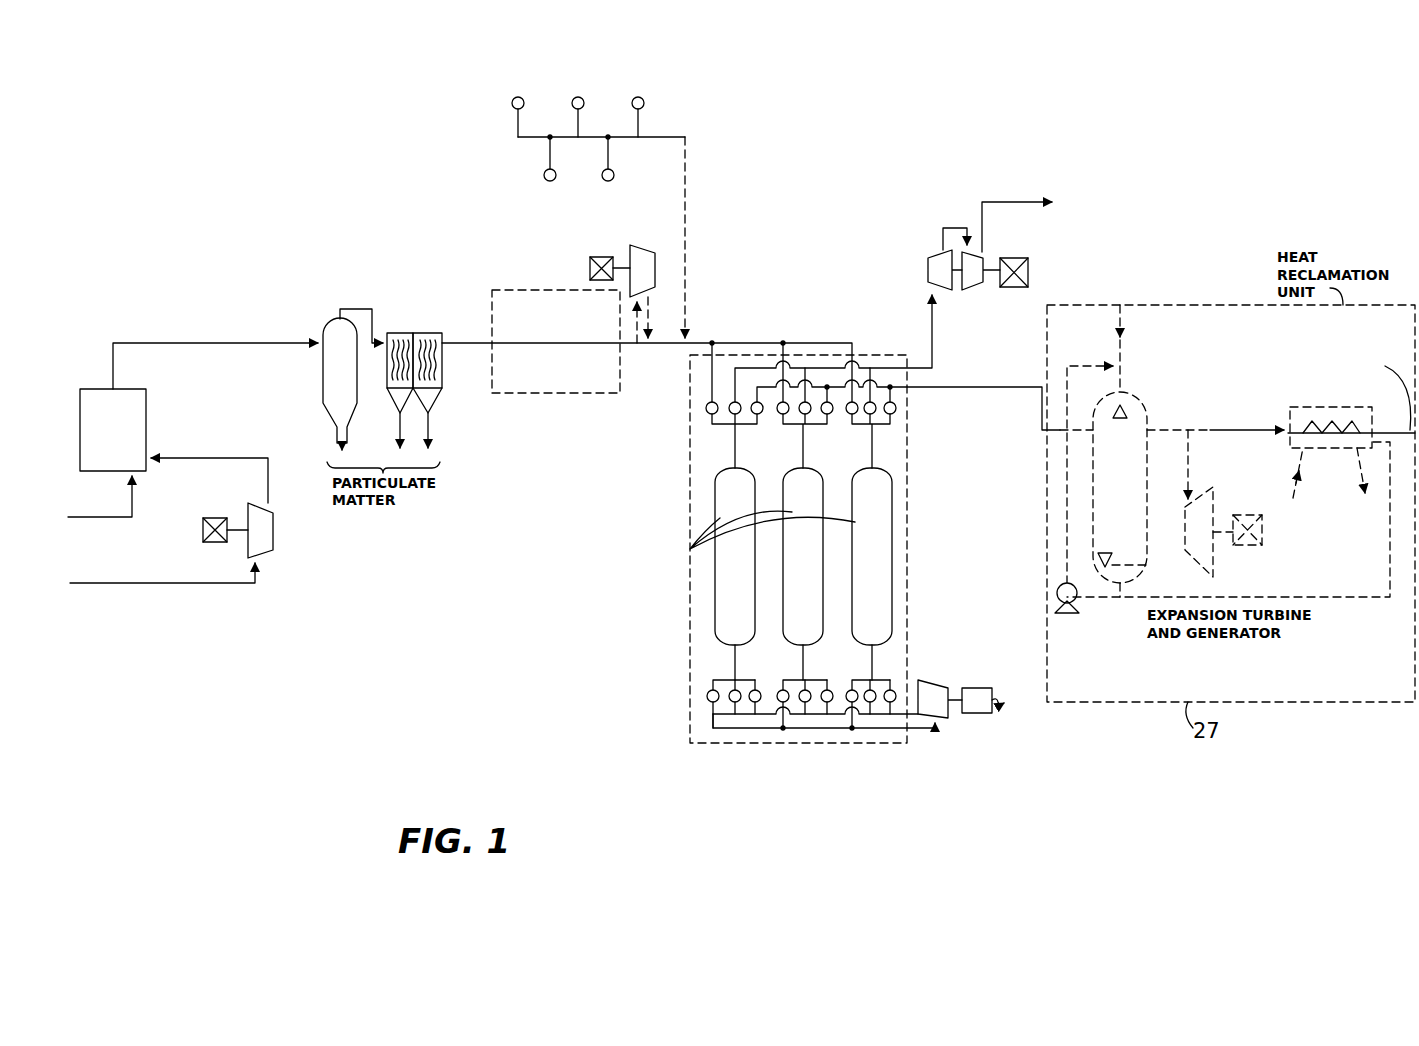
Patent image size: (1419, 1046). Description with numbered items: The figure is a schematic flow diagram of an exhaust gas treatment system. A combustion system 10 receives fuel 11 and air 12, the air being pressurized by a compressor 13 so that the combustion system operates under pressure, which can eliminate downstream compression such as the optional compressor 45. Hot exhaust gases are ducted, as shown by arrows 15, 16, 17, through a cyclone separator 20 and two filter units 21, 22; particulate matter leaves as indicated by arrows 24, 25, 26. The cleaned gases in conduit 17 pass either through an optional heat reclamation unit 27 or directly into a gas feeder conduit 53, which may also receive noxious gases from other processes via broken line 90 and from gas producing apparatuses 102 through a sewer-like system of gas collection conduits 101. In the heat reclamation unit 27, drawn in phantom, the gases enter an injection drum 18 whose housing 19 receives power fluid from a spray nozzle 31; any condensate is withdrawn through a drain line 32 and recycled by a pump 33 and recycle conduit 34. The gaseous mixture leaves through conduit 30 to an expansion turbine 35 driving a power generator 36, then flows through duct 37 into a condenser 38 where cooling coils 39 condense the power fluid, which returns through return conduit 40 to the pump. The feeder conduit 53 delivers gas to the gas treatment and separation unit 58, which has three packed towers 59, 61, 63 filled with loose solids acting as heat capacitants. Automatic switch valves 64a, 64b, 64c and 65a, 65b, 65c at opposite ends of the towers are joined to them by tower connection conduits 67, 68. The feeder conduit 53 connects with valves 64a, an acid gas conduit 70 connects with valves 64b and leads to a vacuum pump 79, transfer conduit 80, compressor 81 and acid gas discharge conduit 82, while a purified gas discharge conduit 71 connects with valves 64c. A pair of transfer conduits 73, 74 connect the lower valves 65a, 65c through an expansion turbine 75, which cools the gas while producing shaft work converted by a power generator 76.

The combustion system 10 is at (122, 450).
The fuel supply arrow 11 is at (132, 497).
The air supply 12 is at (268, 487).
The compressor 13 is at (273, 541).
The exhaust gas duct arrow 15 is at (113, 371).
The exhaust gas duct arrow 16 is at (372, 316).
The conduit 17 is at (470, 343).
The injection drum 18 is at (1152, 412).
The housing 19 is at (1153, 485).
The cyclone separator 20 is at (323, 396).
The filter unit 21 is at (391, 400).
The filter unit 22 is at (438, 400).
The particulate matter arrow 24 is at (341, 441).
The particulate matter arrow 25 is at (400, 442).
The particulate matter arrow 26 is at (430, 442).
The heat reclamation unit 27 is at (565, 393).
The conduit 30 is at (1178, 430).
The spray nozzle 31 is at (1115, 420).
The drain line 32 is at (1122, 592).
The pump 33 is at (1076, 610).
The recycle conduit 34 is at (1067, 493).
The expansion turbine 35 is at (1213, 500).
The power generator 36 is at (1258, 540).
The duct 37 is at (1238, 430).
The condenser 38 is at (1378, 414).
The coils 39 is at (1360, 475).
The return conduit 40 is at (1390, 543).
The compressor 45 is at (652, 258).
The gas feeder conduit 53 is at (738, 343).
The gas treatment and separation unit 58 is at (914, 555).
The packed tower 59 is at (748, 569).
The packed tower 61 is at (815, 569).
The packed tower 63 is at (885, 569).
The automatic switch valve 64a is at (706, 410).
The automatic switch valve 64b is at (731, 412).
The automatic switch valve 64c is at (753, 413).
The automatic switch valve 65a is at (707, 698).
The automatic switch valve 65b is at (731, 700).
The automatic switch valve 65c is at (751, 701).
The tower connection conduit 67 is at (735, 440).
The tower connection conduit 68 is at (803, 668).
The acid gas conduit 70 is at (932, 360).
The purified gas discharge conduit 71 is at (1018, 377).
The transfer conduit 73 is at (745, 728).
The transfer conduit 74 is at (757, 728).
The expansion turbine 75 is at (955, 690).
The power generator 76 is at (997, 690).
The vacuum pump 79 is at (929, 276).
The transfer conduit 80 is at (965, 228).
The compressor 81 is at (970, 292).
The acid gas discharge conduit 82 is at (1020, 202).
The broken line 90 is at (685, 330).
The gas collection conduits 101 is at (577, 122).
The gas producing apparatuses 102 is at (636, 97).